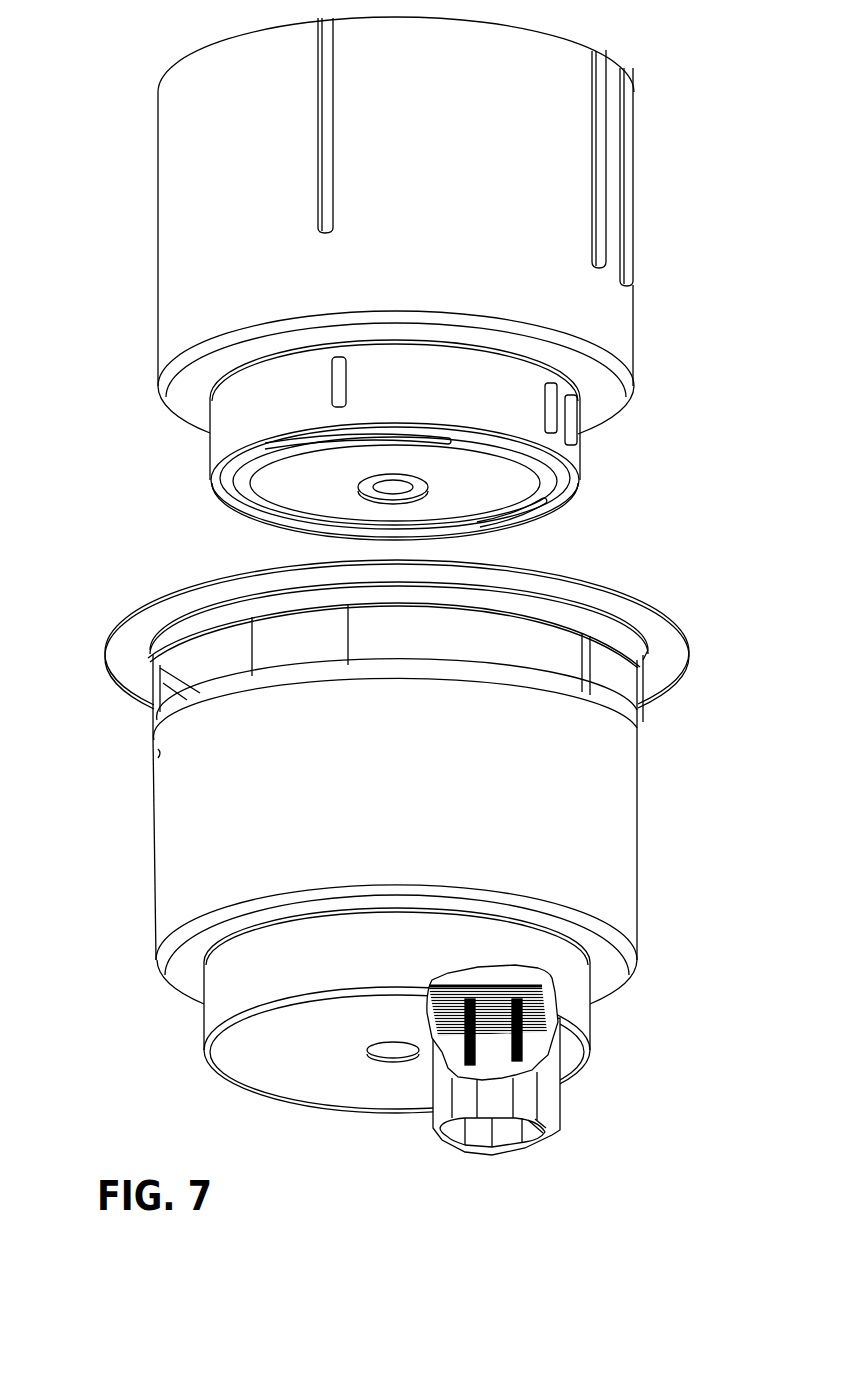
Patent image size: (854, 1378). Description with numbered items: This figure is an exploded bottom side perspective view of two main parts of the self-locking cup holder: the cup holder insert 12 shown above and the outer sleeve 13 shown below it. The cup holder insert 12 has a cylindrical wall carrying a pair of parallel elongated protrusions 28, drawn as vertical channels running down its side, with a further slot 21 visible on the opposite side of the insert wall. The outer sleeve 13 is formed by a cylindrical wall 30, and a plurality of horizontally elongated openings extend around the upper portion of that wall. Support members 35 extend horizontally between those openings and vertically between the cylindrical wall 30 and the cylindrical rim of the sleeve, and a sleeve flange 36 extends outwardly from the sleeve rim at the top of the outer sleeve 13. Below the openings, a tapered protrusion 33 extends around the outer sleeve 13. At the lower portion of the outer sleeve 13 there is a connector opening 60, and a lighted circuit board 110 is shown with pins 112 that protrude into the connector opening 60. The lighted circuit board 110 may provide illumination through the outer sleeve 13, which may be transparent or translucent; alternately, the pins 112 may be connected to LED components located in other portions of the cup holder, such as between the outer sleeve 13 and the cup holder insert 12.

The cup holder insert 12 is at (604, 322).
The slot 21 is at (327, 107).
The parallel elongated protrusions 28 is at (605, 148).
The outer sleeve 13 is at (614, 826).
The cylindrical wall 30 is at (648, 892).
The tapered protrusion 33 is at (152, 757).
The support members 35 is at (335, 641).
The sleeve flange 36 is at (660, 638).
The connector opening 60 is at (560, 1120).
The lighted circuit board 110 is at (462, 987).
The pins 112 is at (530, 1053).